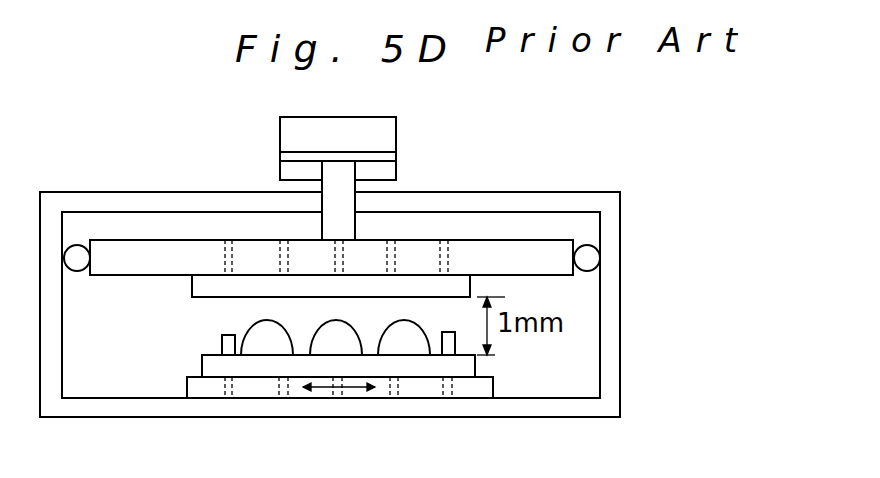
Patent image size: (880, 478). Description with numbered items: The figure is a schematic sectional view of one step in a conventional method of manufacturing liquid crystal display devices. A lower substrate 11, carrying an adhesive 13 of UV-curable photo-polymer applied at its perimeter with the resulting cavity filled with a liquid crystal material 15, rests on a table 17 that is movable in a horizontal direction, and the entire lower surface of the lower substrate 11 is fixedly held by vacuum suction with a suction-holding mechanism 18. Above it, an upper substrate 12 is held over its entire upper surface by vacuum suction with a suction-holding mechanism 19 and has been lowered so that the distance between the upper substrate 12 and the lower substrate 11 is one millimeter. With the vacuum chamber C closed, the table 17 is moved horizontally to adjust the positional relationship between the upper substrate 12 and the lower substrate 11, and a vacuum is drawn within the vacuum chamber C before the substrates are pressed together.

The lower substrate 11 is at (468, 368).
The upper substrate 12 is at (458, 283).
The adhesive 13 is at (453, 316).
The liquid crystal material 15 is at (337, 323).
The table 17 is at (213, 390).
The suction-holding mechanism 18 is at (280, 388).
The suction-holding mechanism 19 is at (453, 258).
The vacuum chamber C is at (605, 403).